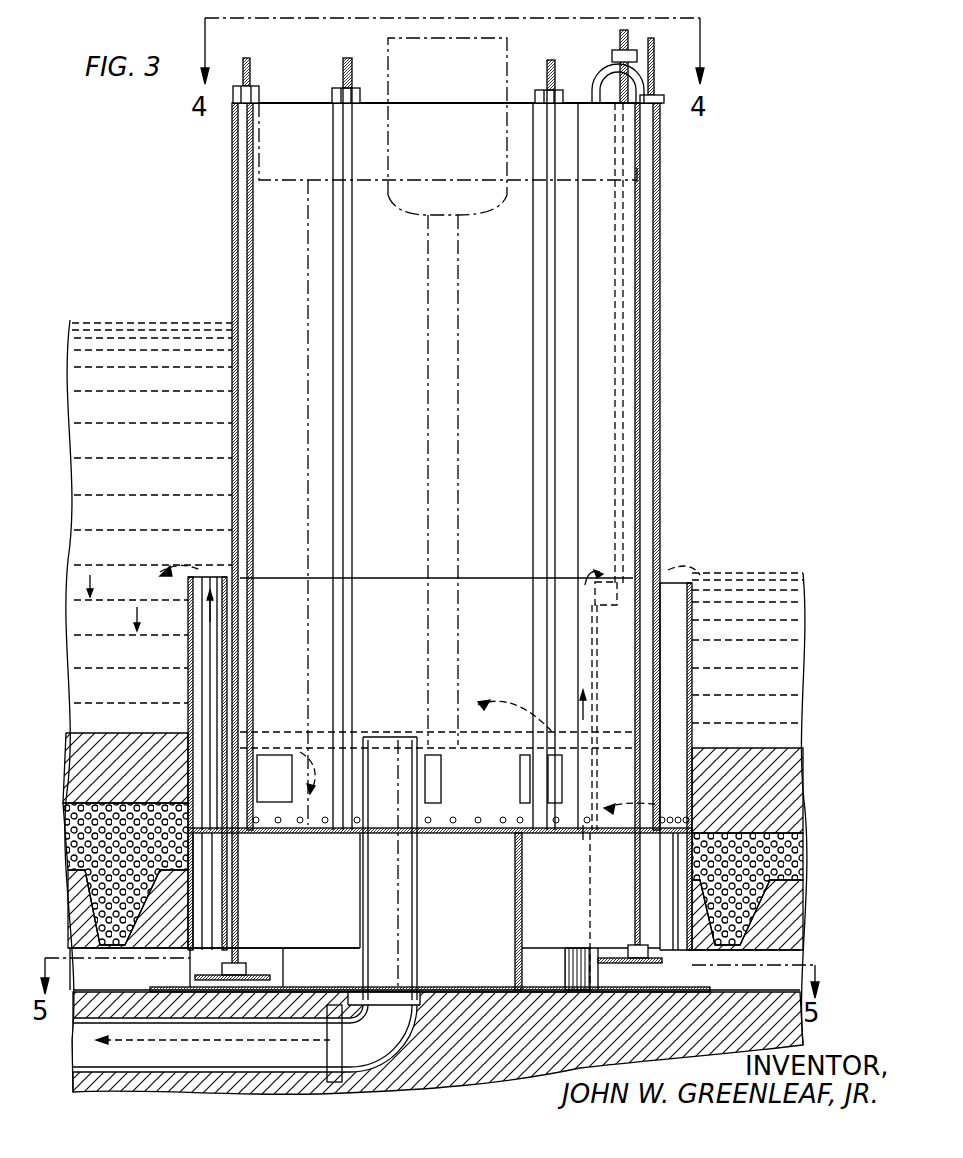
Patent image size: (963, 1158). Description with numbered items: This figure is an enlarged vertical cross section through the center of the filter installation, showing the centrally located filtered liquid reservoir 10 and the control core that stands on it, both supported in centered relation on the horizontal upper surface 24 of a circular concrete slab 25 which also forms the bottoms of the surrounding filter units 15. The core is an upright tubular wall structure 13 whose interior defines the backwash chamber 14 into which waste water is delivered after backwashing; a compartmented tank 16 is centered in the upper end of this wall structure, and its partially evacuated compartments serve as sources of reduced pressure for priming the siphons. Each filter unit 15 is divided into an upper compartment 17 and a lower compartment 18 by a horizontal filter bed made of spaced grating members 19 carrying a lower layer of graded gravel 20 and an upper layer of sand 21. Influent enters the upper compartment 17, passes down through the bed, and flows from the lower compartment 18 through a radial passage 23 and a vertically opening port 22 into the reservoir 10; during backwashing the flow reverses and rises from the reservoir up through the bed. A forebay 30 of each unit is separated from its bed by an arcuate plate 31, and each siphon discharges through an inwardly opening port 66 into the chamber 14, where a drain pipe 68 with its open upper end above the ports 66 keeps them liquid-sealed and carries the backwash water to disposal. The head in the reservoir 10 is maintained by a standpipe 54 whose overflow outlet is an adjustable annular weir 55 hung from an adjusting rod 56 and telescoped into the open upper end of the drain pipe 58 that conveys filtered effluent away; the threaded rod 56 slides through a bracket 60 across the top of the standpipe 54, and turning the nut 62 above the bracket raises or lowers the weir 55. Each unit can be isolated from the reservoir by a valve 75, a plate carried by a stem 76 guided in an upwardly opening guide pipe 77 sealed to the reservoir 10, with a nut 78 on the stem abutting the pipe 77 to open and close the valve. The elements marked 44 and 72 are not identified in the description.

The filtered liquid reservoir 10 is at (333, 872).
The tubular wall structure 13 is at (306, 335).
The backwash chamber 14 is at (413, 560).
The filter unit 15 is at (143, 694).
The compartmented tank 16 is at (471, 86).
The upper compartment 17 is at (92, 630).
The lower compartment 18 is at (127, 987).
The grating members 19 is at (64, 920).
The graded gravel 20 is at (66, 852).
The sand 21 is at (72, 792).
The vertically opening port 22 is at (255, 960).
The radial passage 23 is at (178, 976).
The horizontal upper surface 24 is at (72, 1036).
The circular concrete slab 25 is at (445, 1078).
The forebay 30 is at (210, 578).
The arcuate wall or plate 31 is at (186, 650).
The lid 44 is at (298, 182).
The standpipe 54 is at (578, 520).
The adjustable annular weir 55 is at (596, 598).
The adjusting rod 56 is at (614, 405).
The drain pipe 58 is at (590, 914).
The bridging piece or bracket 60 is at (598, 80).
The nut 62 is at (618, 55).
The inwardly opening port 66 is at (524, 760).
The drain pipe 68 is at (410, 905).
The vent pipe 72 is at (428, 470).
The valve 75 is at (428, 968).
The valve stem 76 is at (250, 70).
The guide pipe 77 is at (345, 347).
The nut 78 is at (260, 95).